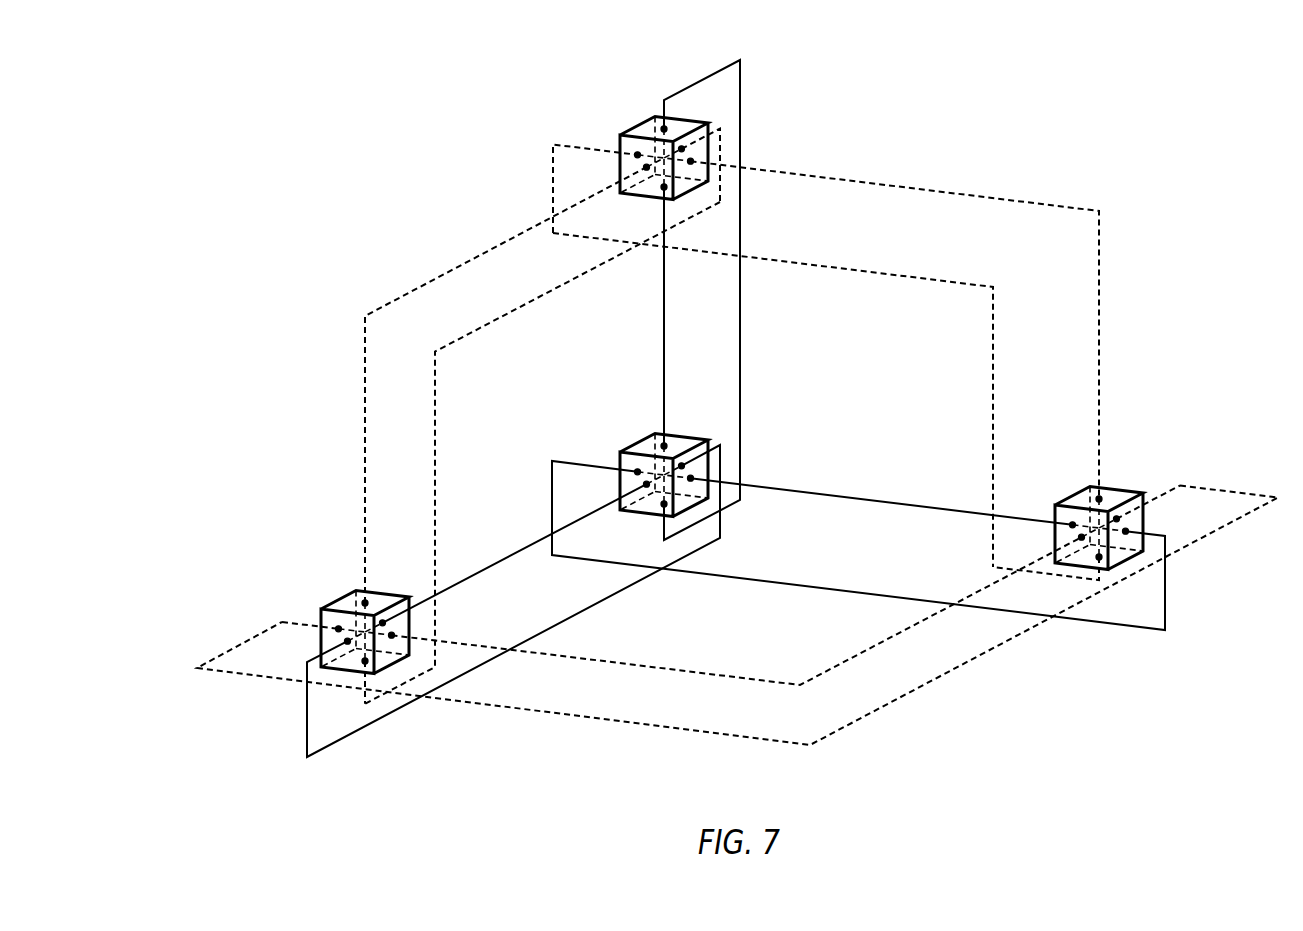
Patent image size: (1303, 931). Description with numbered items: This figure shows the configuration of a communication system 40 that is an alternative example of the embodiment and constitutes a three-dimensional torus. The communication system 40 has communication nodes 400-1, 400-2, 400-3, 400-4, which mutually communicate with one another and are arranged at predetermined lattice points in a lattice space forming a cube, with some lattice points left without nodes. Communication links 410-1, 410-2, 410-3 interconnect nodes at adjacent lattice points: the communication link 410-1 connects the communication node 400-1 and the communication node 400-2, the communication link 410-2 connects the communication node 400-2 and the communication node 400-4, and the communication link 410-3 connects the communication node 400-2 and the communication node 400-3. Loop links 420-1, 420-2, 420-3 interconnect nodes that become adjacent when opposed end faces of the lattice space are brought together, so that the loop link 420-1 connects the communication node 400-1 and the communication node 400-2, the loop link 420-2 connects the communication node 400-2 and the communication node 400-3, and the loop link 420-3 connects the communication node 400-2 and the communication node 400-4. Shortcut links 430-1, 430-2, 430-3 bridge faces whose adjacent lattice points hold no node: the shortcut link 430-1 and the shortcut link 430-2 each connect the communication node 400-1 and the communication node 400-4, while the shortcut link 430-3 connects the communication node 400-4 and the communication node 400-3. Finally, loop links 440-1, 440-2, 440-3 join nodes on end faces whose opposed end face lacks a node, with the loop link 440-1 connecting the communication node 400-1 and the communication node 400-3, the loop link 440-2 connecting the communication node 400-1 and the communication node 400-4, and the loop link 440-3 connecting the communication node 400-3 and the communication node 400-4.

The communication system 40 is at (1151, 82).
The communication node 400-1 is at (634, 130).
The communication node 400-2 is at (634, 448).
The communication node 400-3 is at (1068, 500).
The communication node 400-4 is at (335, 606).
The communication link 410-1 is at (663, 315).
The communication link 410-2 is at (580, 519).
The communication link 410-3 is at (822, 486).
The loop link 420-1 is at (740, 212).
The loop link 420-2 is at (1128, 628).
The loop link 420-3 is at (380, 721).
The shortcut link 430-1 is at (1100, 285).
The shortcut link 430-2 is at (438, 278).
The shortcut link 430-3 is at (851, 659).
The loop link 440-1 is at (908, 273).
The loop link 440-2 is at (462, 337).
The loop link 440-3 is at (888, 705).